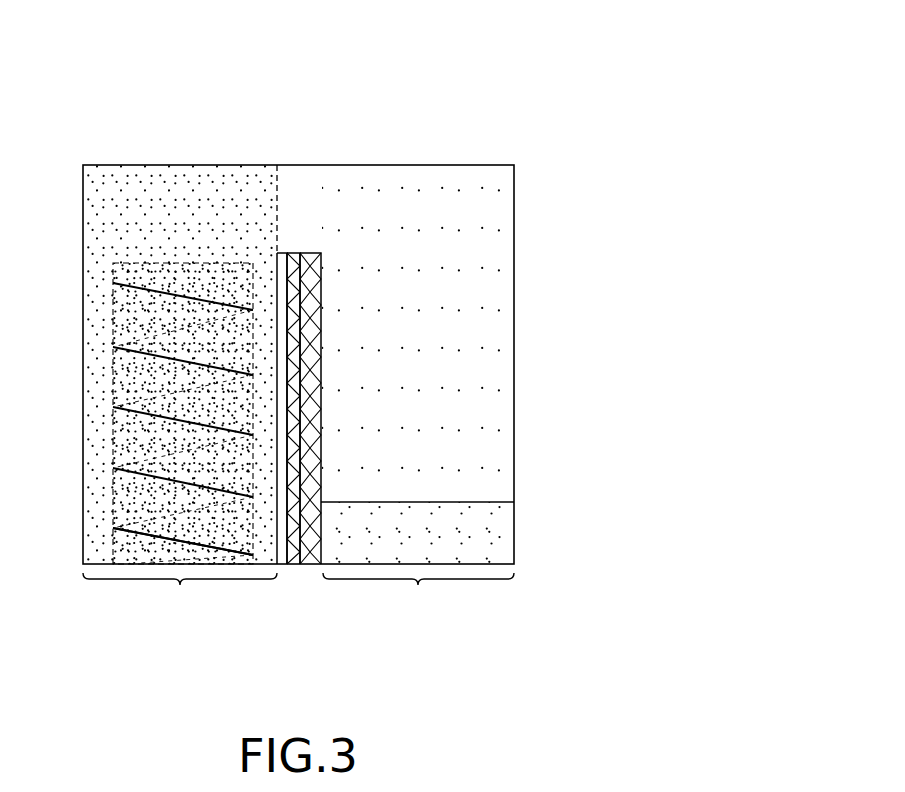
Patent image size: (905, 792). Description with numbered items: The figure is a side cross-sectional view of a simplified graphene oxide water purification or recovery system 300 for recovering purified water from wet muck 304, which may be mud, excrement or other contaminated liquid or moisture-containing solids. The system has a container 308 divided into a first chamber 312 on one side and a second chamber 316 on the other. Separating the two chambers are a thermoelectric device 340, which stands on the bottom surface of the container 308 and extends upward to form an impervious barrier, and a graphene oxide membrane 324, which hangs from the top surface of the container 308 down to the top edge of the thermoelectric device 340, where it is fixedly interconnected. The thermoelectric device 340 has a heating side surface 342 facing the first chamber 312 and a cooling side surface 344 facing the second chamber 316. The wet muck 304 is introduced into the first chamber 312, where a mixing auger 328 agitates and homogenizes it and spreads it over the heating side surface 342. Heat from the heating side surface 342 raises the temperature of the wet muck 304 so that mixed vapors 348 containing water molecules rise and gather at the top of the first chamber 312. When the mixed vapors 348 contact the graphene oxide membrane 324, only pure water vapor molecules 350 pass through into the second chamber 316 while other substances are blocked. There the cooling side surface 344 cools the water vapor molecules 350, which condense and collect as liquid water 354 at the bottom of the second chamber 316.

The graphene oxide water purification or recovery system 300 is at (497, 113).
The wet muck 304 is at (113, 365).
The container 308 is at (318, 165).
The first chamber 312 is at (180, 596).
The second chamber 316 is at (418, 596).
The graphene oxide membrane 324 is at (277, 192).
The mixing auger 328 is at (128, 528).
The thermoelectric device 340 is at (297, 569).
The heating side surface 342 is at (281, 569).
The cooling side surface 344 is at (315, 569).
The mixed vapors 348 is at (142, 212).
The water vapor molecules 350 is at (432, 238).
The liquid water 354 is at (473, 537).